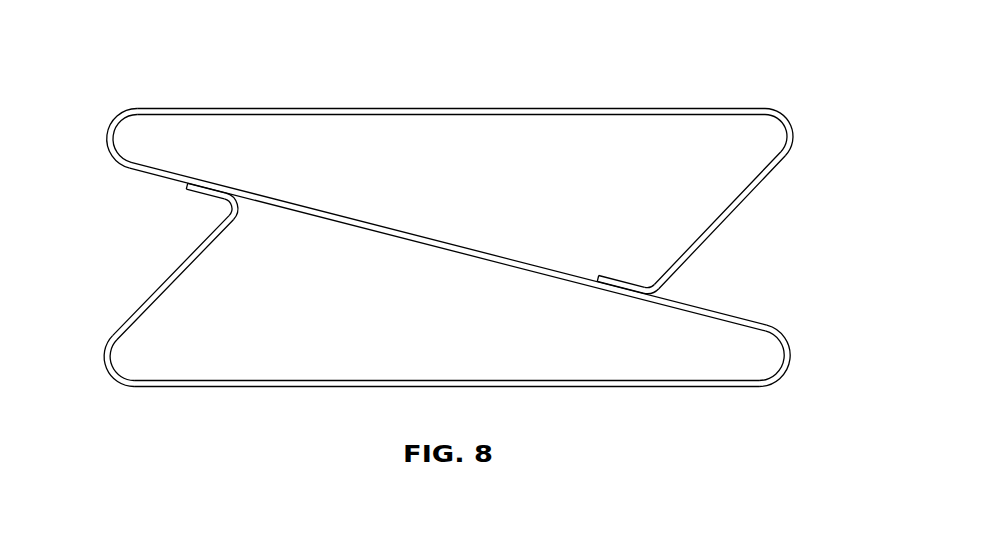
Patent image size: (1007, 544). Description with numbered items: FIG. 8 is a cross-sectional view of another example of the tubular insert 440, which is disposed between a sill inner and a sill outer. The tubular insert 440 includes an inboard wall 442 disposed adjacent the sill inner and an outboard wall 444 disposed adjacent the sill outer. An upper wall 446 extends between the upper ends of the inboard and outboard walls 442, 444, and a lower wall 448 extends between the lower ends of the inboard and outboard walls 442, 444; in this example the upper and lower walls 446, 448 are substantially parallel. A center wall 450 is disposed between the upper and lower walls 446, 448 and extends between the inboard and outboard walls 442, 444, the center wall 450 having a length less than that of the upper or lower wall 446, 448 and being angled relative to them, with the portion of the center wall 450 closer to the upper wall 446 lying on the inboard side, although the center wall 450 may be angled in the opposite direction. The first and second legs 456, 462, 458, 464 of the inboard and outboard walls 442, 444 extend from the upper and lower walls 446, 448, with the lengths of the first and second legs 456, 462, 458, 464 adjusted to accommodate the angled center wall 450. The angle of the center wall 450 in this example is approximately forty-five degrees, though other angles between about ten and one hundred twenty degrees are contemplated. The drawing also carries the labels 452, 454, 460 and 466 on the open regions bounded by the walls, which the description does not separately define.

The tubular insert 440 is at (752, 70).
The inboard wall 442 is at (112, 162).
The outboard wall 444 is at (783, 163).
The upper wall 446 is at (470, 108).
The lower wall 448 is at (523, 388).
The center wall 450 is at (425, 248).
The upper opening 452 is at (548, 205).
The lower opening 454 is at (338, 337).
The first leg 456 is at (758, 190).
The first leg 458 is at (777, 328).
The right side opening 460 is at (765, 279).
The second leg 462 is at (125, 172).
The second leg 464 is at (128, 323).
The left side opening 466 is at (156, 250).